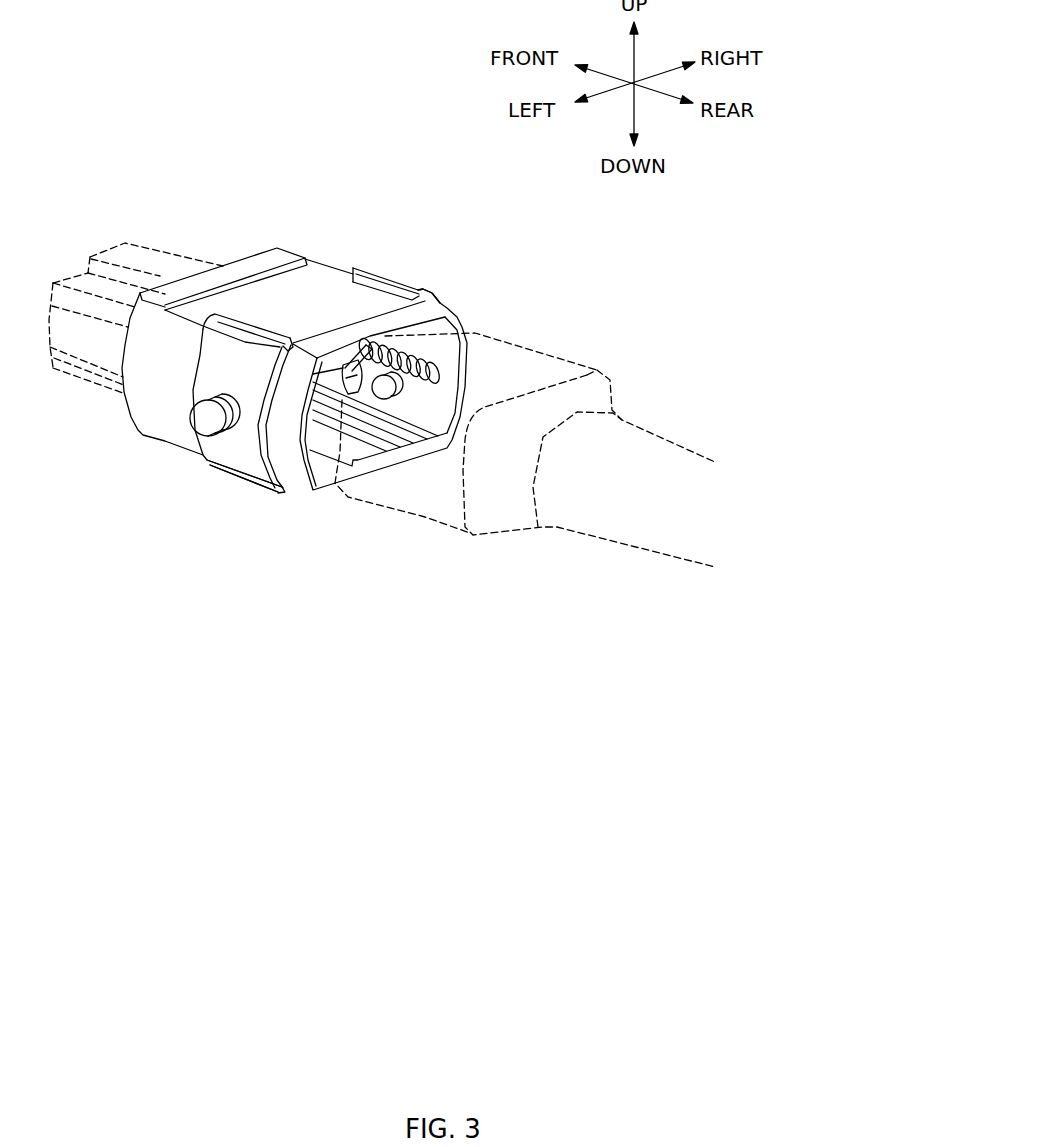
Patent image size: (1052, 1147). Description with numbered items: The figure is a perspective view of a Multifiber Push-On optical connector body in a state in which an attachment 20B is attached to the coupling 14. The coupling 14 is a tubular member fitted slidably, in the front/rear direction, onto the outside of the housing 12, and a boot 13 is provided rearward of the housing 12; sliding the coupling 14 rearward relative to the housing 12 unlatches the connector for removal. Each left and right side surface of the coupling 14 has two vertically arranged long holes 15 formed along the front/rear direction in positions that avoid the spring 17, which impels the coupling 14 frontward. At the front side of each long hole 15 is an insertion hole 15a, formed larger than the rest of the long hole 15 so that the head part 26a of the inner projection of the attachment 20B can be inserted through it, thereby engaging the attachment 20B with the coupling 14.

The housing 12 is at (178, 247).
The boot 13 is at (533, 370).
The coupling 14 is at (309, 283).
The long hole 15 is at (344, 451).
The insertion hole 15a is at (344, 367).
The spring 17 is at (445, 336).
The attachment 20B is at (387, 274).
The head part 26a is at (380, 380).